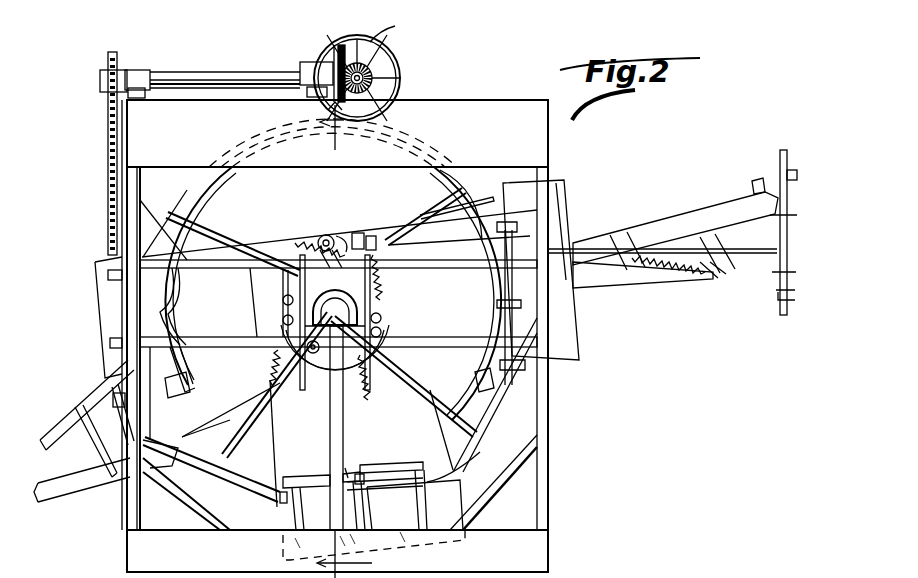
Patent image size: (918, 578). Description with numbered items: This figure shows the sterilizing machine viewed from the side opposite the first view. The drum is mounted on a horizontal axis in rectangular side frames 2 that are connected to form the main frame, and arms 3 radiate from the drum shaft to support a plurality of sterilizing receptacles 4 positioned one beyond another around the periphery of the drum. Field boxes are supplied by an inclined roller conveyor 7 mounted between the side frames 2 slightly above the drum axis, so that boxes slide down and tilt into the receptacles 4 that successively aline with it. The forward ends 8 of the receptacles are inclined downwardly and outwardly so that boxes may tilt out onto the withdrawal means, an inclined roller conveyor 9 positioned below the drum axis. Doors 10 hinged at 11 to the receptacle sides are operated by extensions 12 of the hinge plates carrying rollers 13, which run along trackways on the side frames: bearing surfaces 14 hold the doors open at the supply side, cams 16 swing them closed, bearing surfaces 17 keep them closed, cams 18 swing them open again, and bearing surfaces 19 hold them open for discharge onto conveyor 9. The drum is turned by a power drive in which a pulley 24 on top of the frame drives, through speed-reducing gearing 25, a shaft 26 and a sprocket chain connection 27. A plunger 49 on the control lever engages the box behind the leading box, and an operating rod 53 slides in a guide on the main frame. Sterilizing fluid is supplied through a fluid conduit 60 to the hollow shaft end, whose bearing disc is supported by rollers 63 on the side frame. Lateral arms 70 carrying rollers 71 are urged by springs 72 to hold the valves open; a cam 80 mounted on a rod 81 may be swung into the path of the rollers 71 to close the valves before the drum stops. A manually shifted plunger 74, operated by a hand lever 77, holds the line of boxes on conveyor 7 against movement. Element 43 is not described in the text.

The side frames 2 is at (546, 178).
The arms 3 is at (333, 340).
The sterilizing receptacles 4 is at (324, 346).
The inclined roller conveyor 7 is at (722, 213).
The forward ends 8 is at (226, 426).
The inclined roller conveyor 9 is at (66, 482).
The doors 10 is at (117, 310).
The hinges 11 is at (404, 468).
The extensions 12 is at (362, 508).
The rollers 13 is at (375, 452).
The bearing surfaces 14 is at (488, 358).
The cams 16 is at (455, 208).
The bearing surfaces 17 is at (486, 142).
The cams 18 is at (166, 302).
The bearing surfaces 19 is at (186, 380).
The pulley 24 is at (388, 68).
The gearing 25 is at (365, 44).
The shaft 26 is at (244, 42).
The sprocket chain connection 27 is at (108, 124).
The spring 43 is at (291, 375).
The plunger 49 is at (748, 179).
The operating rod 53 is at (640, 272).
The fluid conduit 60 is at (341, 438).
The rollers 63 is at (364, 386).
The lateral arms 70 is at (340, 238).
The rollers 71 is at (330, 228).
The springs 72 is at (298, 238).
The plunger 74 is at (815, 162).
The hand lever 77 is at (781, 304).
The cam 80 is at (392, 212).
The rod 81 is at (682, 270).